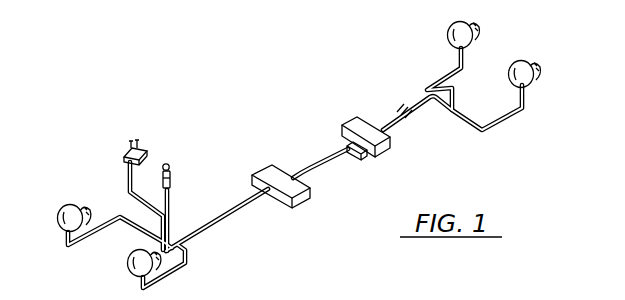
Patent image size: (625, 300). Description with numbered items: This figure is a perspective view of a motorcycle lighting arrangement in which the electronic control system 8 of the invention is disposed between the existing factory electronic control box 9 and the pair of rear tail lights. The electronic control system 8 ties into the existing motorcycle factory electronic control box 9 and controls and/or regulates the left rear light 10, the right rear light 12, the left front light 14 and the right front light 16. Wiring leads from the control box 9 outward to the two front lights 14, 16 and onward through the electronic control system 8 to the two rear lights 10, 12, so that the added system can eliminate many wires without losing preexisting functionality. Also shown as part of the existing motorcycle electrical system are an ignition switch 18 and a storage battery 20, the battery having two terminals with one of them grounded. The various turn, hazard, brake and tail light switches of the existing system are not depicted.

The electronic control system 8 is at (357, 122).
The motorcycle factory electronic control box 9 is at (270, 170).
The left rear light 10 is at (539, 64).
The right rear light 12 is at (474, 17).
The left front light 14 is at (127, 263).
The right front light 16 is at (64, 205).
The ignition switch 18 is at (166, 162).
The storage battery 20 is at (131, 147).